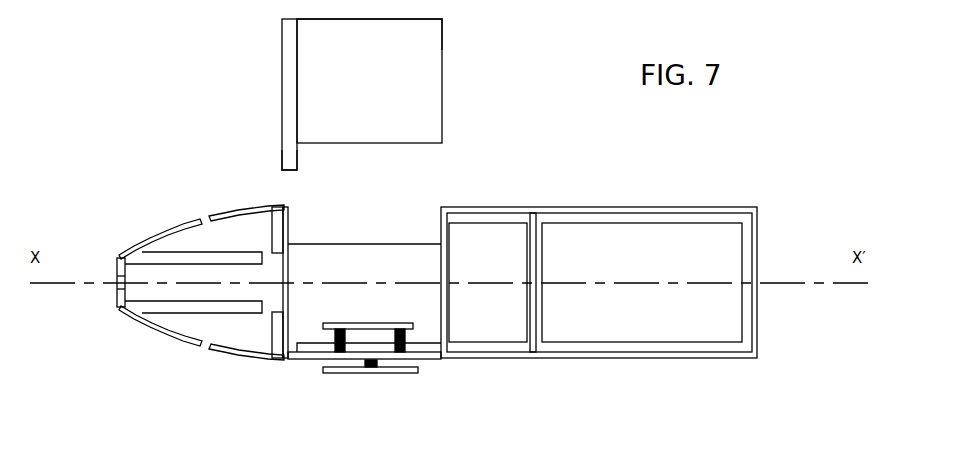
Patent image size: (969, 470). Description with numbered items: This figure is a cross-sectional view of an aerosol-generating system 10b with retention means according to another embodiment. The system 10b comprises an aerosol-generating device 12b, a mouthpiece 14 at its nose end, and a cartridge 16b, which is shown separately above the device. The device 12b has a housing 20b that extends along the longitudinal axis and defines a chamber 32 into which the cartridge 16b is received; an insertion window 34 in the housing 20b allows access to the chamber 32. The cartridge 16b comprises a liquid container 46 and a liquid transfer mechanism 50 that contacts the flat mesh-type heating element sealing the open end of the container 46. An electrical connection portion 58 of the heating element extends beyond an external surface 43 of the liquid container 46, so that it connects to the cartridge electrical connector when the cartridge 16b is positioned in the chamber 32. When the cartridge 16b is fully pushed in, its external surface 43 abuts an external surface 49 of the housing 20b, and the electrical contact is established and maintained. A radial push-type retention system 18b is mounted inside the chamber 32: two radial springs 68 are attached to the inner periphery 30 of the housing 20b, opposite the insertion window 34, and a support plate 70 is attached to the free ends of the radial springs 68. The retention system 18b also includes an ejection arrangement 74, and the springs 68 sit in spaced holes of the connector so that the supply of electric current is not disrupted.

The aerosol-generating system 10b is at (459, 286).
The aerosol-generating device 12b is at (180, 305).
The mouthpiece 14 is at (172, 231).
The cartridge 16b is at (362, 93).
The radial push-type retention system 18b is at (362, 323).
The housing 20b is at (599, 249).
The inner periphery 30 is at (428, 343).
The chamber 32 is at (372, 289).
The insertion window 34 is at (360, 242).
The external surface 43 is at (436, 143).
The liquid container 46 is at (443, 22).
The external surface 49 is at (577, 207).
The liquid transfer mechanism 50 is at (282, 68).
The electrical connection portion 58 is at (282, 152).
The radial springs 68 is at (332, 338).
The support plate 70 is at (398, 328).
The ejection arrangement 74 is at (365, 379).